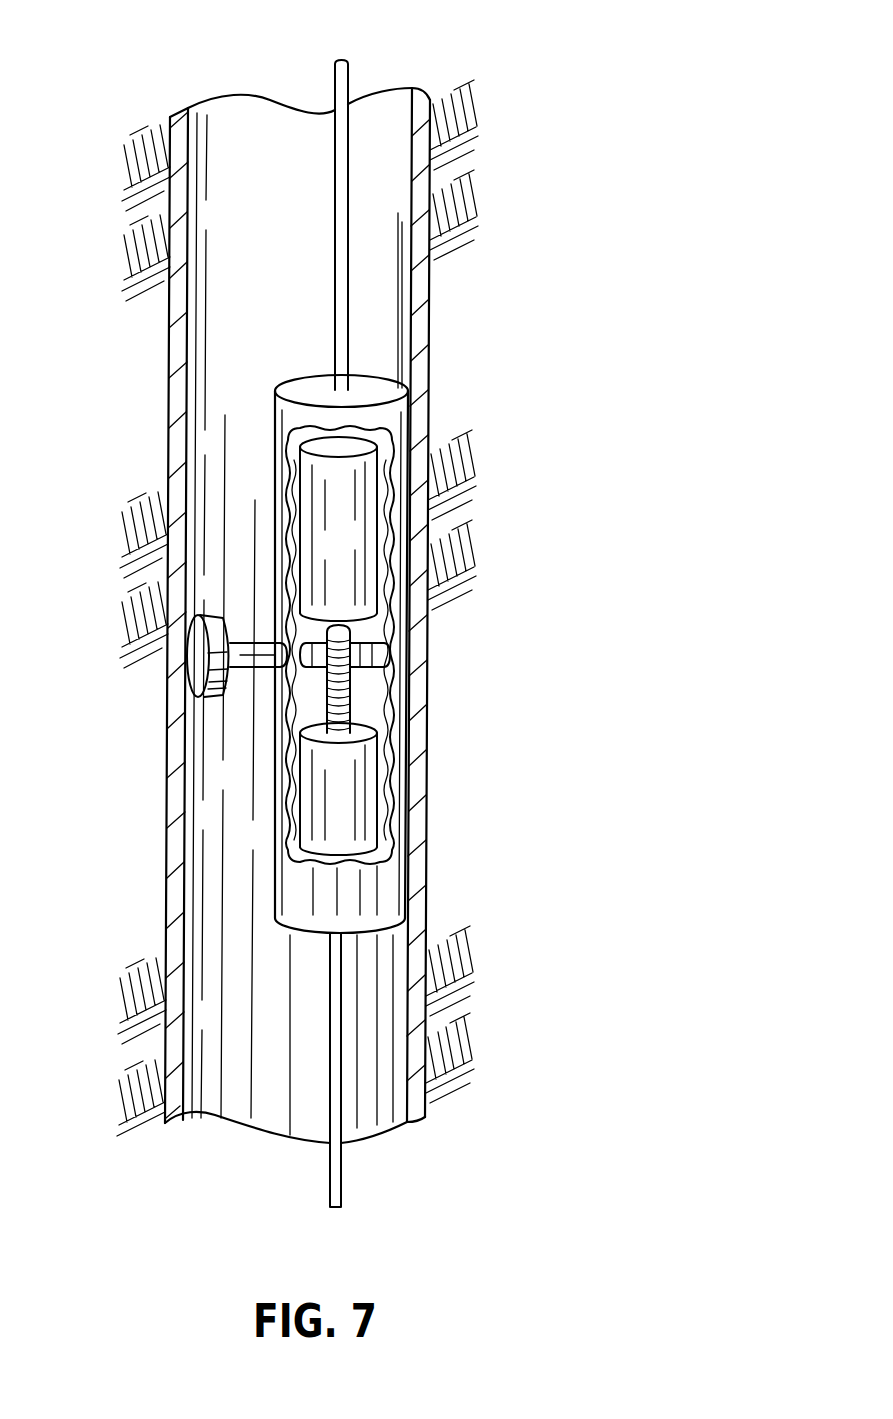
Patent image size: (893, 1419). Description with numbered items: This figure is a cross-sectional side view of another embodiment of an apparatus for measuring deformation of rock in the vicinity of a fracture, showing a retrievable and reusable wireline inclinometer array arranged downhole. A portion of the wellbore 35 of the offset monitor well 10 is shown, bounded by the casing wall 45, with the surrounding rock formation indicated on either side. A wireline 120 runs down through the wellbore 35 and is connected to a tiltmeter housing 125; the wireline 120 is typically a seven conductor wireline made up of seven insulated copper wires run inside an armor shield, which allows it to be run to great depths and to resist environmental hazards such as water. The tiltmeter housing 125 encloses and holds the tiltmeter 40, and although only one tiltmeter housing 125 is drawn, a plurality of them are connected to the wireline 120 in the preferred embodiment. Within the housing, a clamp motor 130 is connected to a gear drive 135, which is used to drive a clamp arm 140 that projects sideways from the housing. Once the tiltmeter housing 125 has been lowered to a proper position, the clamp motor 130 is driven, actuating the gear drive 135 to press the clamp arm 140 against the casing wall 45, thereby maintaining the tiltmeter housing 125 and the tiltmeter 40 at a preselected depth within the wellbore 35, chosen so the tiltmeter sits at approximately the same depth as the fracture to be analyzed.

The offset monitor well 10 is at (476, 158).
The wellbore 35 is at (257, 165).
The casing wall 45 is at (168, 348).
The tiltmeter 40 is at (357, 480).
The wireline 120 is at (347, 318).
The tiltmeter housing 125 is at (350, 890).
The clamp motor 130 is at (357, 698).
The gear drive 135 is at (290, 705).
The clamp arm 140 is at (195, 662).